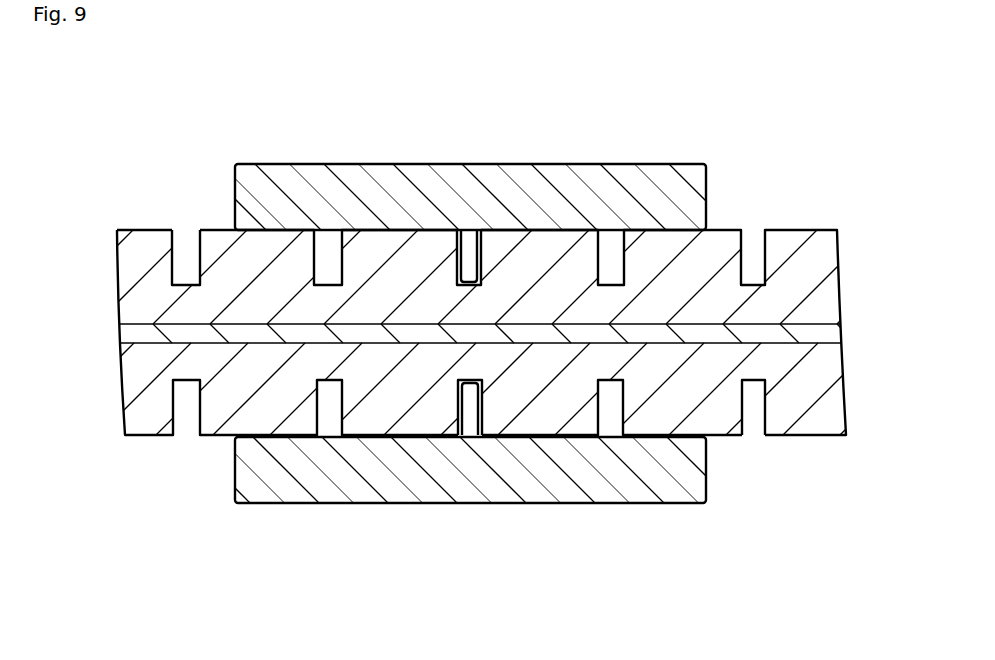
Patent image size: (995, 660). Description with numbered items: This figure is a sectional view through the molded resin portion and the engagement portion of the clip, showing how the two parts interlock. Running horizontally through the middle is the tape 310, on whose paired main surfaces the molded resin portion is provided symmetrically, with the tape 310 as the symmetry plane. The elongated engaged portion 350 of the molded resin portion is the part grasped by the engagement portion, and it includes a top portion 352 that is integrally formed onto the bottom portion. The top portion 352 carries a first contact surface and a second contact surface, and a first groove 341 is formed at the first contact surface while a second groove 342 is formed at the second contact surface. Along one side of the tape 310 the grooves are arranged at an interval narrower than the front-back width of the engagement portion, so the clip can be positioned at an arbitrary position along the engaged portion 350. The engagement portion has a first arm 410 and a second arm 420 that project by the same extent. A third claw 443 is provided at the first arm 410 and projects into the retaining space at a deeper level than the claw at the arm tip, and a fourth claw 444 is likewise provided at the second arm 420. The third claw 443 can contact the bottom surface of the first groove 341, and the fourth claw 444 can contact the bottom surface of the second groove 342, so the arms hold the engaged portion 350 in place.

The tape 310 is at (132, 332).
The first groove 341 is at (183, 255).
The second groove 342 is at (755, 415).
The engaged portion 350 is at (181, 477).
The top portion 352 is at (147, 425).
The first arm 410 is at (682, 207).
The second arm 420 is at (682, 470).
The third claw 443 is at (468, 250).
The fourth claw 444 is at (468, 412).